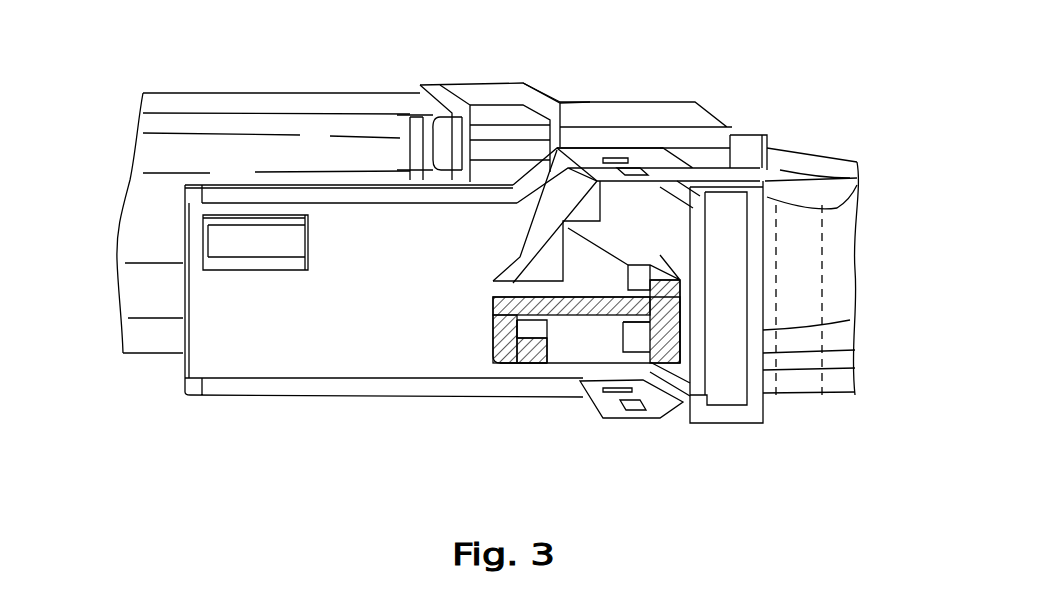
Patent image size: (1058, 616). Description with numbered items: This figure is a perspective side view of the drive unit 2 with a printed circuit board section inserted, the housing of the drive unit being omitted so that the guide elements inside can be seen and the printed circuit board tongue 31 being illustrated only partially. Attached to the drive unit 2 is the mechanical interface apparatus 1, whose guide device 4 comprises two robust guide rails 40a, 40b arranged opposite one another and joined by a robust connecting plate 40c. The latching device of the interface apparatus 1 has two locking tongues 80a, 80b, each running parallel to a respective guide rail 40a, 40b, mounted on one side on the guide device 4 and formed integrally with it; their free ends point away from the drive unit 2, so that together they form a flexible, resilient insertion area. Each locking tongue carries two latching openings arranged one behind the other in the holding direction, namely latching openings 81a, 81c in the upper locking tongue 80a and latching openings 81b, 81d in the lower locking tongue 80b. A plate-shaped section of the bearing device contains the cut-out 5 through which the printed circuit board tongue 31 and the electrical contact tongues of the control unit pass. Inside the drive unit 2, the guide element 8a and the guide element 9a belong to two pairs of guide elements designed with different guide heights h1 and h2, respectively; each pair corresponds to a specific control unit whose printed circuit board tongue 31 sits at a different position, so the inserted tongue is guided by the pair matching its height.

The mechanical interface apparatus 1 is at (238, 347).
The drive unit 2 is at (218, 98).
The guide device 4 is at (360, 352).
The cut-out 5 is at (610, 240).
The guide element 8a is at (673, 308).
The guide element 9a is at (497, 305).
The printed circuit board tongue 31 is at (520, 352).
The guide rail 40a is at (725, 186).
The guide rail 40b is at (727, 412).
The connecting plate 40c is at (758, 258).
The locking tongue 80a is at (655, 150).
The locking tongue 80b is at (618, 414).
The latching opening 81a is at (635, 165).
The latching opening 81b is at (648, 405).
The latching opening 81c is at (605, 156).
The latching opening 81d is at (587, 385).
The guide height h1 is at (645, 332).
The guide height h2 is at (520, 336).